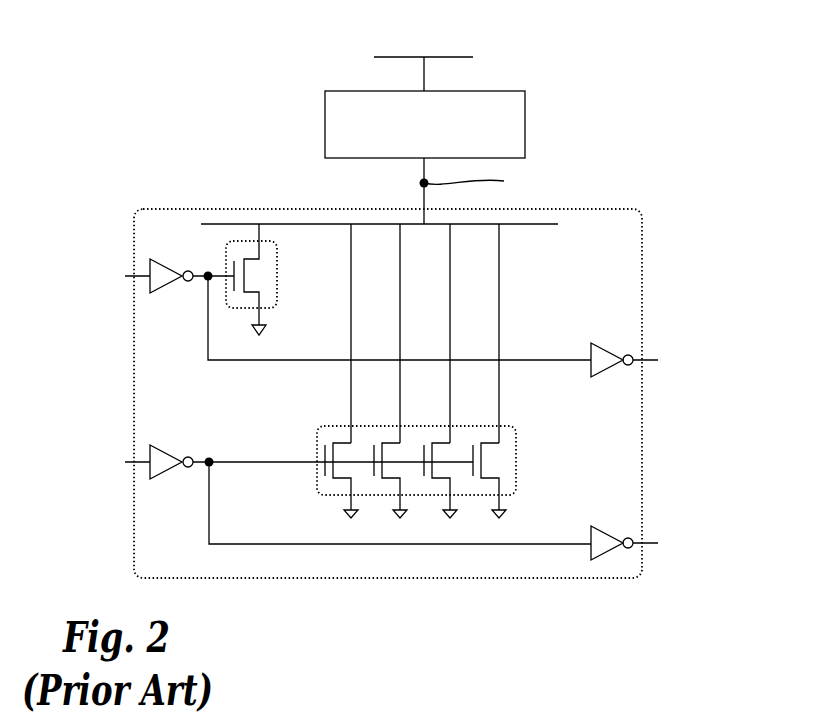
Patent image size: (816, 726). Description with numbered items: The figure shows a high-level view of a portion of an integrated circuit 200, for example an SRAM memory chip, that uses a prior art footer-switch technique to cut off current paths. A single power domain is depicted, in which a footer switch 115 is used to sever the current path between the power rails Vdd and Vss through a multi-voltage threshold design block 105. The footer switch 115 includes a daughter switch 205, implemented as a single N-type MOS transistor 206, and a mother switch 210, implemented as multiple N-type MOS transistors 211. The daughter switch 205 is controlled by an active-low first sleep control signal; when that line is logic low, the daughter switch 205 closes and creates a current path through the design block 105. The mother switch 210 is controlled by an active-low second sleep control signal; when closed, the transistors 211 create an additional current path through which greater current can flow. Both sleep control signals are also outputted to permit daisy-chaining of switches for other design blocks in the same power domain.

The integrated circuit 200 is at (203, 72).
The multi-voltage threshold design block 105 is at (492, 91).
The footer switch 115 is at (176, 571).
The daughter switch 205 is at (277, 279).
The N-type MOS transistor 206 is at (252, 275).
The mother switch 210 is at (443, 454).
The N-type MOS transistors 211 is at (447, 452).